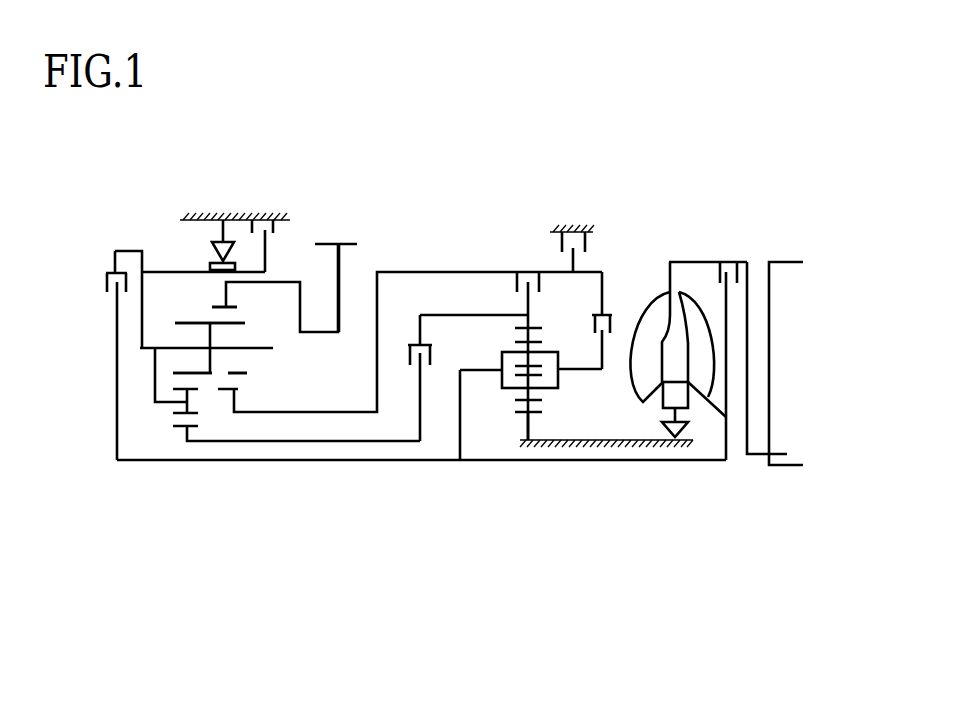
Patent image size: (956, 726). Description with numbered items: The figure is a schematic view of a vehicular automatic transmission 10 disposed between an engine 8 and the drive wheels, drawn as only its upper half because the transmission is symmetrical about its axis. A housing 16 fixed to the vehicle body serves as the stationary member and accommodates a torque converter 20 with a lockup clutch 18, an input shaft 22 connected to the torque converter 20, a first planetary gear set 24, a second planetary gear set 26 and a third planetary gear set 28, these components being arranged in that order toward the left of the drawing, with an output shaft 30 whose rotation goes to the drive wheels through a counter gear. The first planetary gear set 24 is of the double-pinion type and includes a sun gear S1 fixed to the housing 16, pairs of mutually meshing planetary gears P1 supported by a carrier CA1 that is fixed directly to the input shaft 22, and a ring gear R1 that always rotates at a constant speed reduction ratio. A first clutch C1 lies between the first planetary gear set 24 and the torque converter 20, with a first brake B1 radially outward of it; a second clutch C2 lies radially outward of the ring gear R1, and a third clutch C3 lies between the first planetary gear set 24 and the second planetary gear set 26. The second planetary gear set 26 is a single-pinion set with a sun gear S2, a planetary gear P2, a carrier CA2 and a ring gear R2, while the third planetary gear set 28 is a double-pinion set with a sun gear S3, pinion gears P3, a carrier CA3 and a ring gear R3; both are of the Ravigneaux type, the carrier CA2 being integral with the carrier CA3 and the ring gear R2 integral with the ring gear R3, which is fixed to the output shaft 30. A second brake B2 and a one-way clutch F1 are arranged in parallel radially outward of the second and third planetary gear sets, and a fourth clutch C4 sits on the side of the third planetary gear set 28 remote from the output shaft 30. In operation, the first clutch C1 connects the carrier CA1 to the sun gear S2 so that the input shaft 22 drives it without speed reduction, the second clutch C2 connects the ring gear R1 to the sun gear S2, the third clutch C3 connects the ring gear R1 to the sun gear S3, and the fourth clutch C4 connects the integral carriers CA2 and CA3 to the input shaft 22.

The engine 8 is at (786, 268).
The automatic transmission 10 is at (652, 160).
The housing 16 is at (197, 217).
The lockup clutch 18 is at (744, 262).
The torque converter 20 is at (689, 245).
The input shaft 22 is at (667, 460).
The first planetary gear set 24 is at (532, 478).
The second planetary gear set 26 is at (243, 478).
The third planetary gear set 28 is at (187, 478).
The output shaft 30 is at (325, 243).
The first clutch C1 is at (596, 320).
The second clutch C2 is at (541, 356).
The third clutch C3 is at (468, 378).
The fourth clutch C4 is at (105, 366).
The first brake B1 is at (574, 240).
The second brake B2 is at (259, 234).
The one-way clutch F1 is at (220, 233).
The sun gear S1 is at (519, 412).
The sun gear S2 is at (239, 391).
The sun gear S3 is at (190, 427).
The planetary gears P1 is at (547, 403).
The planetary gear P2 is at (231, 366).
The pinion gears P3 is at (188, 372).
The carrier CA1 is at (488, 368).
The carrier CA2 is at (239, 347).
The carrier CA3 is at (188, 347).
The ring gear R1 is at (538, 328).
The ring gear R2 is at (237, 308).
The ring gear R3 is at (217, 308).